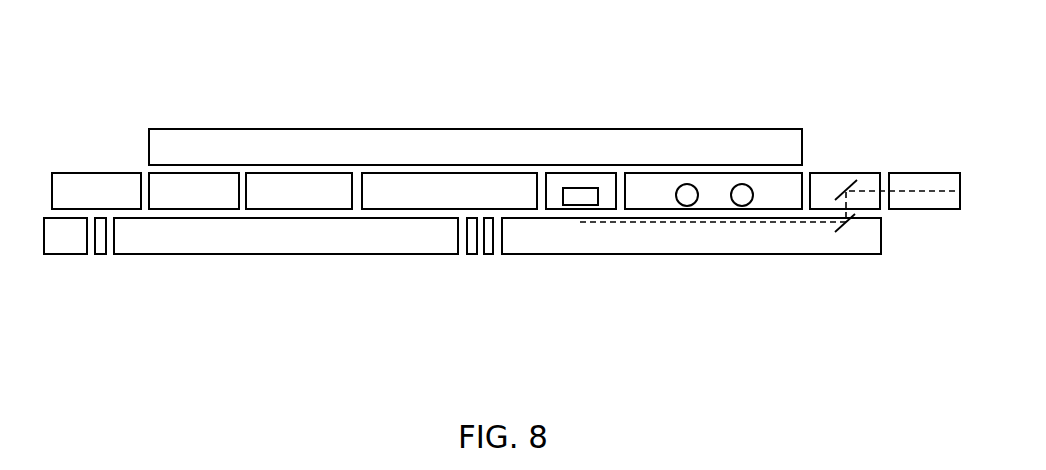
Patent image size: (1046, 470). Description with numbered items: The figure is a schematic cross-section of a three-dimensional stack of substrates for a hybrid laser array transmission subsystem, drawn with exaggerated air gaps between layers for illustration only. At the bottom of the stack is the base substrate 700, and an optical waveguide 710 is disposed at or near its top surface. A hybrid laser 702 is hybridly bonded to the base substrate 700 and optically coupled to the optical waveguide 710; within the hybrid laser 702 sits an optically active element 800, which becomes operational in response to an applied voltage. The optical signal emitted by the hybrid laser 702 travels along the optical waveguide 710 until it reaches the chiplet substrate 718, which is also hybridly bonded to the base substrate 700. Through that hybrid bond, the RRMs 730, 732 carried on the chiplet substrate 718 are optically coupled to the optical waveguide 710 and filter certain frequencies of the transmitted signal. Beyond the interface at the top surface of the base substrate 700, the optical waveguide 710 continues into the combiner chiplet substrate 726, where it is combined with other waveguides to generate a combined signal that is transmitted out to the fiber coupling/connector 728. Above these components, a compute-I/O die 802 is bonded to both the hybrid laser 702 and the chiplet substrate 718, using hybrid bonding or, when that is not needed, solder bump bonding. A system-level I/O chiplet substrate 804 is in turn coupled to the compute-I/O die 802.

The base substrate 700 is at (662, 254).
The hybrid laser 702 is at (597, 173).
The optical waveguide 710 is at (690, 222).
The chiplet substrate 718 is at (757, 173).
The combiner chiplet substrate 726 is at (840, 173).
The fiber coupling/connector 728 is at (922, 209).
The RRM 730 is at (687, 184).
The RRM 732 is at (742, 184).
The optically active element 800 is at (577, 198).
The compute-I/O die 802 is at (475, 147).
The system-level I/O chiplet substrate 804 is at (449, 191).